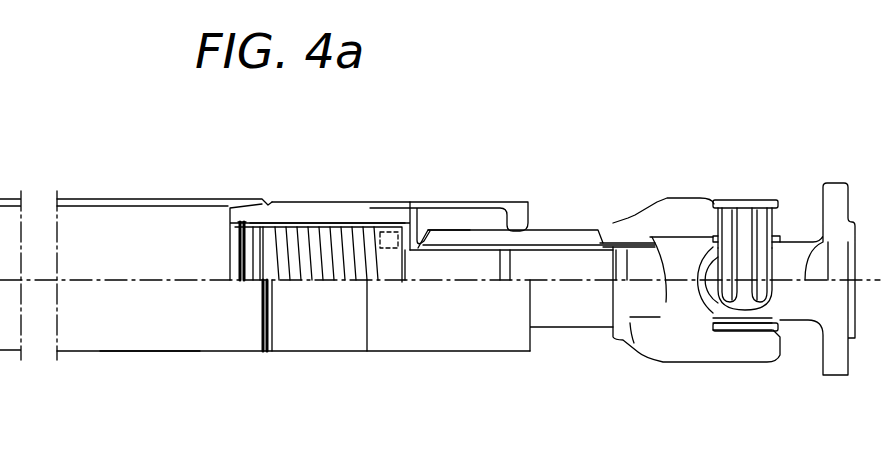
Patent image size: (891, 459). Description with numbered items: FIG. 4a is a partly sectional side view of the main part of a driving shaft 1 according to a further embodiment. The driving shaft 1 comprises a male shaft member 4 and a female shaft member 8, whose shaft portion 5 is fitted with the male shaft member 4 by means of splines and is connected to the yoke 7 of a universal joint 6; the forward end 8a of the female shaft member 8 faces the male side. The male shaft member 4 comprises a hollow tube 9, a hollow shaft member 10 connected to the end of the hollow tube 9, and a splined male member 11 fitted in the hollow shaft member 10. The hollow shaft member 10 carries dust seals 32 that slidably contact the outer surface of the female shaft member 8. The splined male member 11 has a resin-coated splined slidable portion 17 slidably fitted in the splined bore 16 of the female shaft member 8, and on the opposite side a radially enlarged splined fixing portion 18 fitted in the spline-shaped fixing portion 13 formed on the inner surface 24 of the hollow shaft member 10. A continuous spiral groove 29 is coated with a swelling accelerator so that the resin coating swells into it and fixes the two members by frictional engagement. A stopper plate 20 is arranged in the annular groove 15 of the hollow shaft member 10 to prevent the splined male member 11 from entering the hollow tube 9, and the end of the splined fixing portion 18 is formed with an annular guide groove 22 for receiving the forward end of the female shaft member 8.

The driving shaft 1 is at (108, 178).
The male shaft member 4 is at (170, 365).
The shaft portion 5 is at (572, 231).
The universal joint 6 is at (760, 177).
The yoke 7 is at (685, 218).
The female shaft member 8 is at (660, 375).
The shaft end 8a is at (430, 240).
The hollow tube 9 is at (145, 202).
The hollow shaft member 10 is at (305, 205).
The splined male member 11 is at (450, 267).
The spline-shaped fixing portion 13 is at (345, 223).
The annular groove 15 is at (241, 258).
The splined bore 16 is at (633, 245).
The splined slidable portion 17 is at (595, 245).
The splined fixing portion 18 is at (383, 260).
The stopper plate 20 is at (255, 265).
The annular guide groove 22 is at (395, 233).
The inner surface 24 is at (230, 248).
The continuous spiral groove 29 is at (340, 265).
The dust seals 32 is at (470, 203).